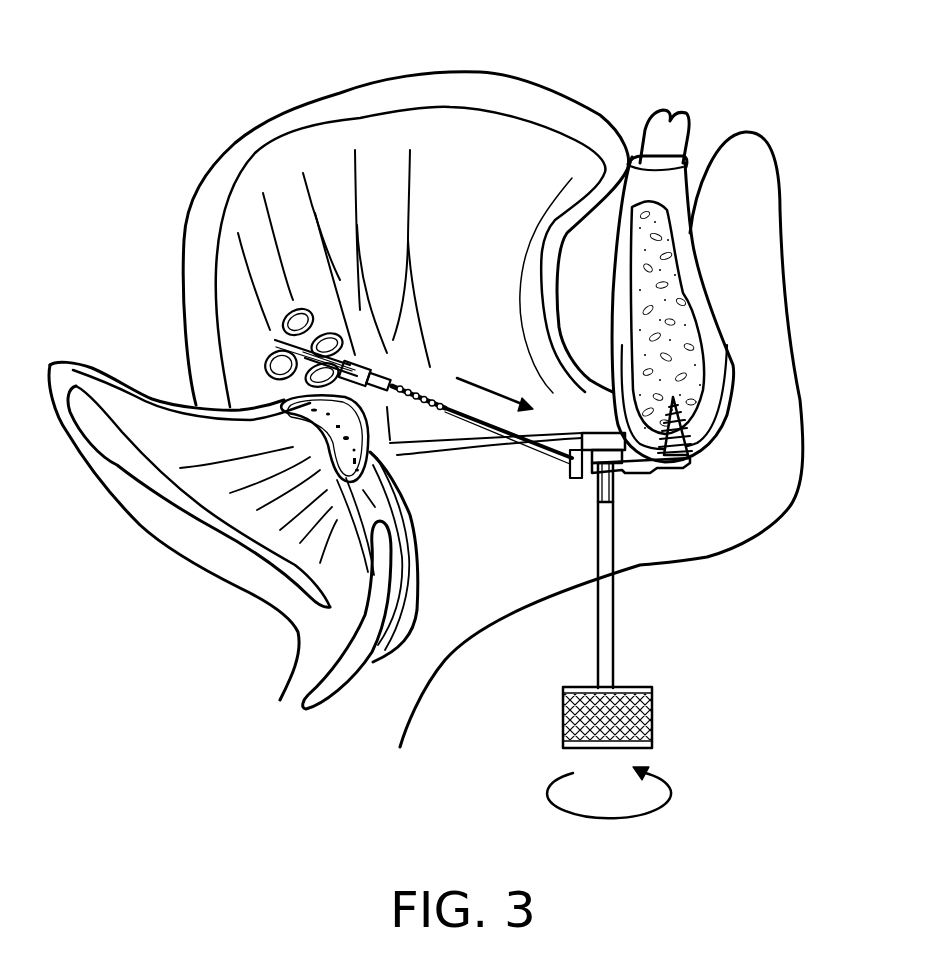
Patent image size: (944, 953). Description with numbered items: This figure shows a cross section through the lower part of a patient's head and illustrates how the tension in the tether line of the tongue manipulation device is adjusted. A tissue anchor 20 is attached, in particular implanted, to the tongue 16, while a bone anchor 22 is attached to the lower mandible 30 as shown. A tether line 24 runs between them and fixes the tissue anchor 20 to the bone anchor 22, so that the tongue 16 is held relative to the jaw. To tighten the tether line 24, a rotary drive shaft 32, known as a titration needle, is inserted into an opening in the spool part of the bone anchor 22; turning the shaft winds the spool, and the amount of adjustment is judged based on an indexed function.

The tongue 16 is at (427, 90).
The tissue anchor 20 is at (275, 364).
The bone anchor 22 is at (690, 463).
The tether line 24 is at (566, 465).
The lower mandible 30 is at (675, 276).
The rotary drive shaft 32 is at (664, 658).